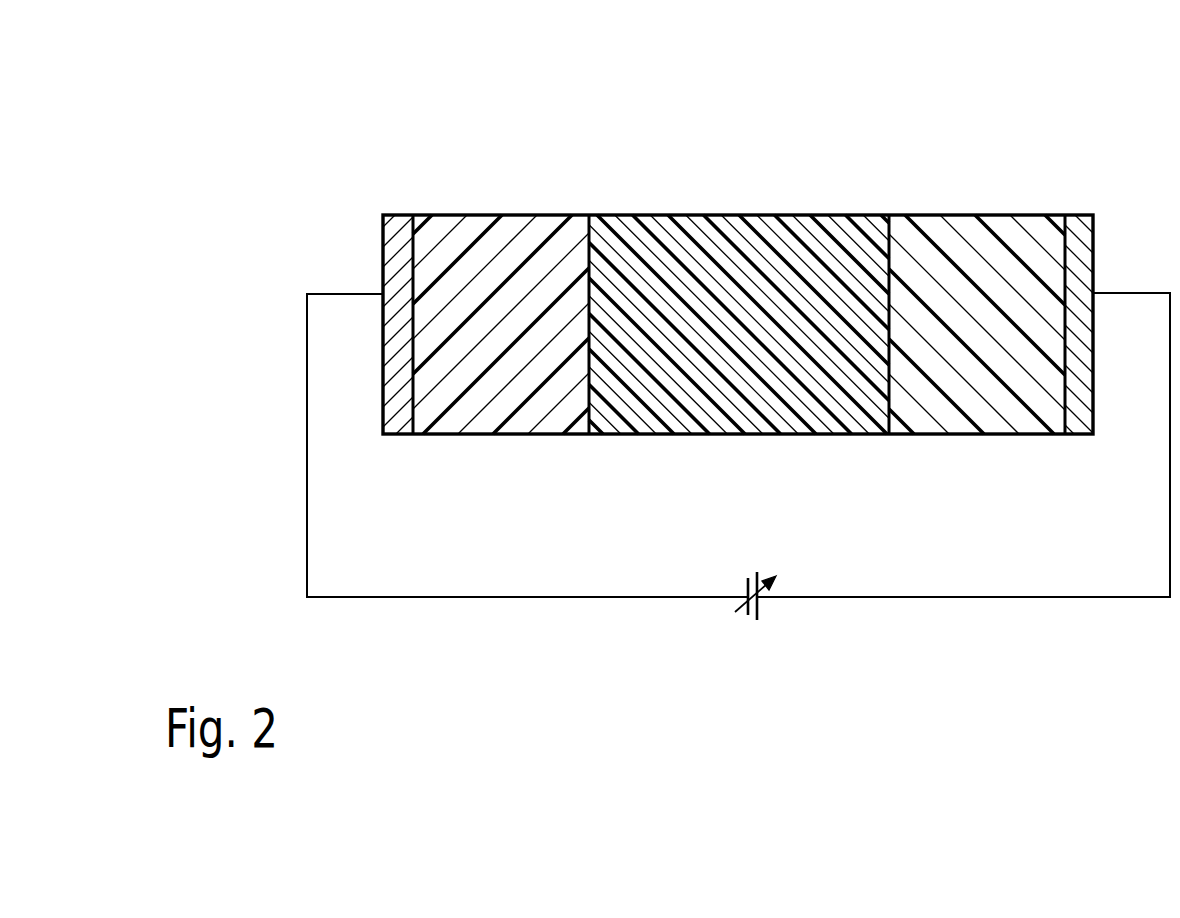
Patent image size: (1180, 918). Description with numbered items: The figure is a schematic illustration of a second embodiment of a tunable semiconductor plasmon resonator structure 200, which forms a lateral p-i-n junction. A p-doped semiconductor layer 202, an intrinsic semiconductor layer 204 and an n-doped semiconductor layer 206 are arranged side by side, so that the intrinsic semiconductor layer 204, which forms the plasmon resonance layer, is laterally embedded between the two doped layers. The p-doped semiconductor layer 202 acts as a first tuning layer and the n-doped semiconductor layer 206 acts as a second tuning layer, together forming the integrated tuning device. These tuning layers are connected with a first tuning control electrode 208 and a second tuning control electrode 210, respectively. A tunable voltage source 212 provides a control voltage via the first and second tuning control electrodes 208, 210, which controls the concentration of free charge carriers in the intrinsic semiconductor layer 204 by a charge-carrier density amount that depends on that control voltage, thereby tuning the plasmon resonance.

The tunable semiconductor plasmon resonator structure 200 is at (384, 90).
The p-doped semiconductor layer 202 is at (497, 248).
The intrinsic semiconductor layer 204 is at (741, 252).
The n-doped semiconductor layer 206 is at (981, 252).
The first tuning control electrode 208 is at (392, 257).
The second tuning control electrode 210 is at (1087, 259).
The tunable voltage source 212 is at (746, 625).